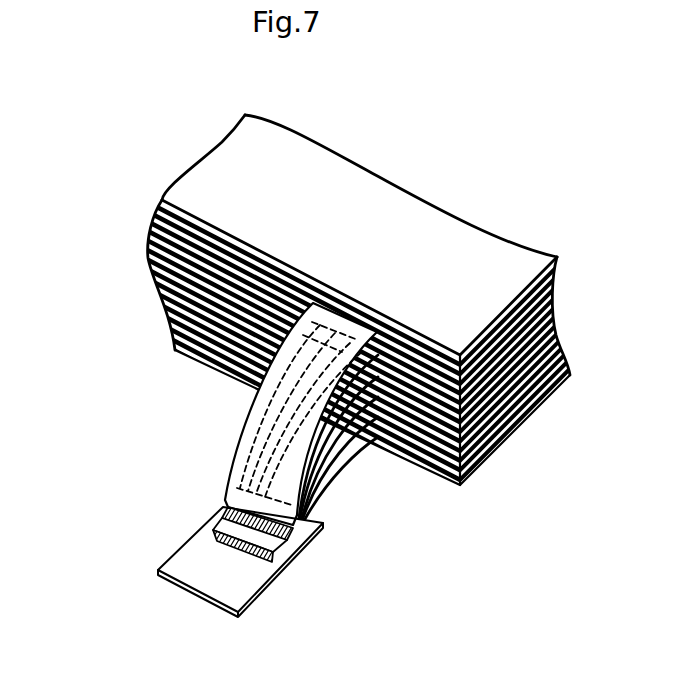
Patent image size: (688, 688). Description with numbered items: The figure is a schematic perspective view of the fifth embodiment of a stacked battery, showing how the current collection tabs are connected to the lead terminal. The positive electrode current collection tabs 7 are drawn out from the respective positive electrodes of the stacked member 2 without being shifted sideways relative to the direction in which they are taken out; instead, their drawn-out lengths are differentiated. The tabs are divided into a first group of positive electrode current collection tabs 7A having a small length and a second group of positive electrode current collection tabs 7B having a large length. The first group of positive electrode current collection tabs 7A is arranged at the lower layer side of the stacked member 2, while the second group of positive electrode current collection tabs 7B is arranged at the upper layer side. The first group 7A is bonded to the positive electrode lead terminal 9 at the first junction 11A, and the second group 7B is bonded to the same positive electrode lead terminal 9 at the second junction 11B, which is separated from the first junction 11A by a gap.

The stacked member 2 is at (460, 196).
The positive electrode current collection tabs 7 is at (372, 433).
The first group of positive electrode current collection tabs 7A is at (359, 484).
The second group of positive electrode current collection tabs 7B is at (232, 413).
The positive electrode lead terminal 9 is at (200, 575).
The first junction 11A is at (227, 507).
The second junction 11B is at (213, 533).